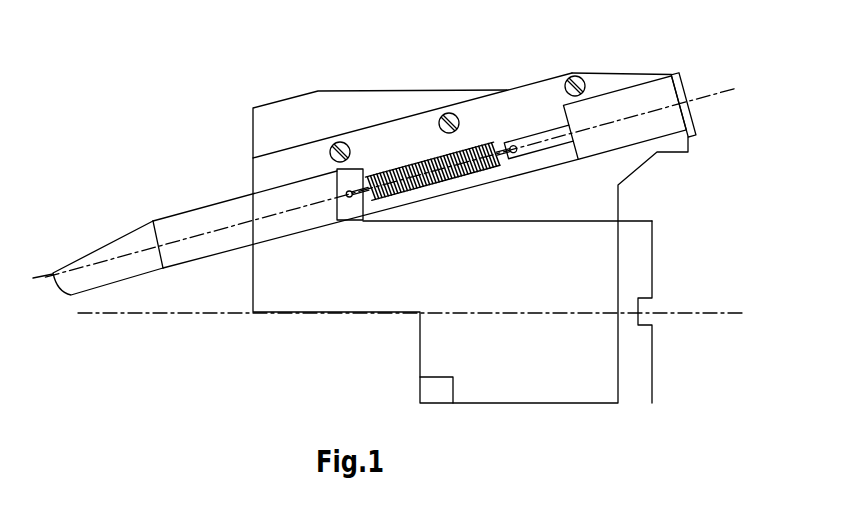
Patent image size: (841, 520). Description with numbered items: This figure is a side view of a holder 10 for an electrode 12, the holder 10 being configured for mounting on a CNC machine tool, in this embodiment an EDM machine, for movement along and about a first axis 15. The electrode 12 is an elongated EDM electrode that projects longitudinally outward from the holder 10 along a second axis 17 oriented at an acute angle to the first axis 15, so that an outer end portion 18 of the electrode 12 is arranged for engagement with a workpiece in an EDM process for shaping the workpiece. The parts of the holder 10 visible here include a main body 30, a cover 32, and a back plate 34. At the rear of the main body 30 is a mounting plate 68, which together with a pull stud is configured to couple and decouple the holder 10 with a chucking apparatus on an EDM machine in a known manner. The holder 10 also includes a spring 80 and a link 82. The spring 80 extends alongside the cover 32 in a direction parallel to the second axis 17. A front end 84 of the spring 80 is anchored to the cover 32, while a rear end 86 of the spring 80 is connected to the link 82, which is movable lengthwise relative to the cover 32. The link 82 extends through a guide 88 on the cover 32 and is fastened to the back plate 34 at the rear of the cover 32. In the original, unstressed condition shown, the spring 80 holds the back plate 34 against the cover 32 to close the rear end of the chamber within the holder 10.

The holder 10 is at (211, 75).
The electrode 12 is at (190, 207).
The first axis 15 is at (165, 313).
The second axis 17 is at (40, 271).
The outer end portion 18 is at (107, 243).
The main body 30 is at (308, 288).
The cover 32 is at (393, 120).
The back plate 34 is at (685, 90).
The mounting plate 68 is at (637, 257).
The spring 80 is at (478, 148).
The link 82 is at (533, 137).
The front end 84 is at (348, 197).
The rear end 86 is at (518, 150).
The guide 88 is at (610, 108).